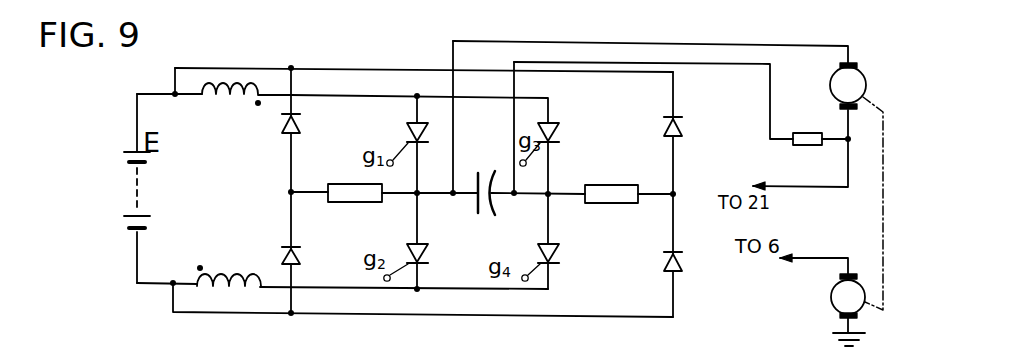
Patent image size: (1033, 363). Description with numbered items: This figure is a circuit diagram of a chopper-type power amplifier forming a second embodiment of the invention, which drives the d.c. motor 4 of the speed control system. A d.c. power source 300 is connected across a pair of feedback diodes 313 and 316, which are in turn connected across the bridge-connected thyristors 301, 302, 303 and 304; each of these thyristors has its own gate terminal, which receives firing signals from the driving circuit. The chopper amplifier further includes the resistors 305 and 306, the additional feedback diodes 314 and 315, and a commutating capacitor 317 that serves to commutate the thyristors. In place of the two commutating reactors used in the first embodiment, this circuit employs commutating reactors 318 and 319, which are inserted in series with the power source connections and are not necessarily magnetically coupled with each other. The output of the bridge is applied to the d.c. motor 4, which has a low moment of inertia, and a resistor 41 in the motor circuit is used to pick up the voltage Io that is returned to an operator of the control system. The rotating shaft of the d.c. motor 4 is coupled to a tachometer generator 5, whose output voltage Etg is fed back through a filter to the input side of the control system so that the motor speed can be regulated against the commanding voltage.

The d.c. power source 300 is at (131, 186).
The commutating reactor 318 is at (225, 105).
The commutating reactor 319 is at (230, 269).
The feedback diode 313 is at (303, 126).
The feedback diode 314 is at (303, 257).
The feedback diode 315 is at (683, 128).
The feedback diode 316 is at (683, 262).
The thyristor 301 is at (410, 122).
The thyristor 302 is at (429, 248).
The thyristor 303 is at (560, 132).
The thyristor 304 is at (560, 252).
The resistor 305 is at (356, 202).
The resistor 306 is at (638, 204).
The commutating capacitor 317 is at (487, 172).
The resistor 41 is at (806, 131).
The d.c. motor 4 is at (857, 74).
The tachometer generator 5 is at (832, 297).